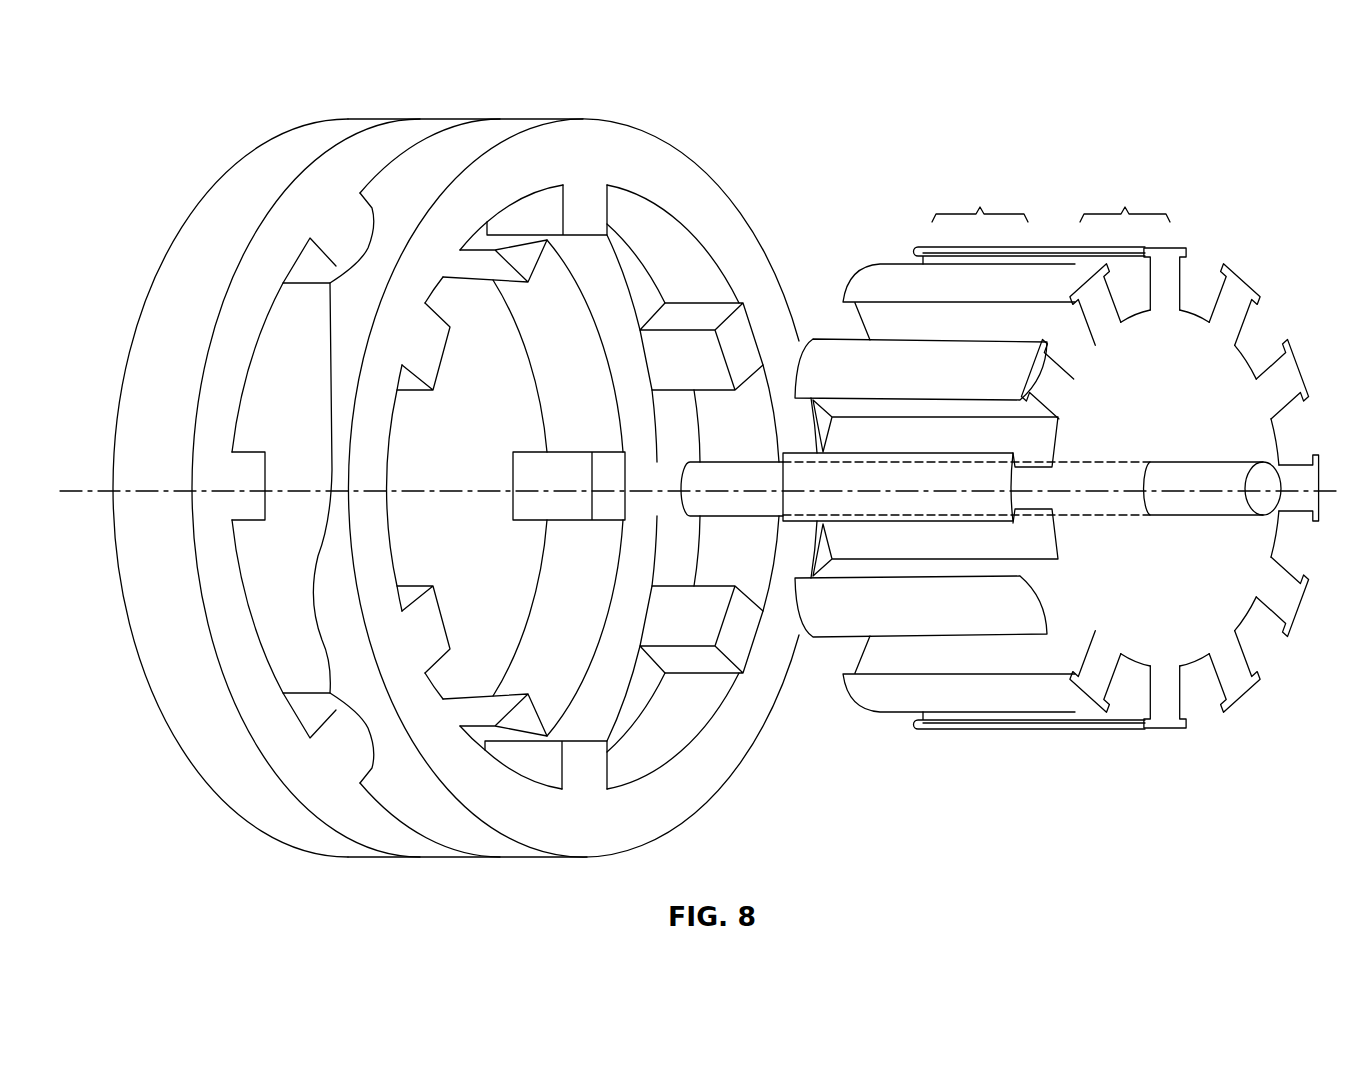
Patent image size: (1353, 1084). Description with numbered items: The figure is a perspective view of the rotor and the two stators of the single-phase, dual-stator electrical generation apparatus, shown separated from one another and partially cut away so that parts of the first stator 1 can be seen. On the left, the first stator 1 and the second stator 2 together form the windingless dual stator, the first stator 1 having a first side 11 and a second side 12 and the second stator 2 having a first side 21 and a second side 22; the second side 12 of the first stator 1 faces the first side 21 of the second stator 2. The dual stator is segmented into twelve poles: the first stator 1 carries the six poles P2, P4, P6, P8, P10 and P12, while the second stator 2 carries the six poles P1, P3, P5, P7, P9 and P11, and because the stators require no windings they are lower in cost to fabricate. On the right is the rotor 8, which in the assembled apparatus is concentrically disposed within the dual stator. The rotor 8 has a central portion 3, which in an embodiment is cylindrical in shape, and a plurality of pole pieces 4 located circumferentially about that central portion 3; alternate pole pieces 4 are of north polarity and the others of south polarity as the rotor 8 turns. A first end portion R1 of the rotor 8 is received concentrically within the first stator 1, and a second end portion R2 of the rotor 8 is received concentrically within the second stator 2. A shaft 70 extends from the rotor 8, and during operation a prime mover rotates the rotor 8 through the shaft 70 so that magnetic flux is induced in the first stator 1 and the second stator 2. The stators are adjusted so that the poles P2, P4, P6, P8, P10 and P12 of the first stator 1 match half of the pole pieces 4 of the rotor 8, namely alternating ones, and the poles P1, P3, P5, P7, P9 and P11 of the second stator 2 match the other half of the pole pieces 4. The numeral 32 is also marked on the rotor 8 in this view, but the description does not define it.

The first stator 1 is at (214, 177).
The second stator 2 is at (732, 177).
The central portion 3 is at (1257, 428).
The pole pieces 4 is at (1240, 287).
The rotor 8 is at (1177, 599).
The first side 11 is at (165, 250).
The second side 12 is at (400, 136).
The first side 21 is at (440, 845).
The second side 22 is at (710, 770).
The rotor pole 32 is at (1195, 667).
The shaft 70 is at (1213, 502).
The pole P1 is at (547, 210).
The pole P2 is at (495, 259).
The pole P3 is at (701, 346).
The pole P4 is at (569, 486).
The pole P5 is at (701, 629).
The pole P6 is at (495, 716).
The pole P7 is at (546, 765).
The pole P8 is at (319, 718).
The pole P9 is at (423, 629).
The pole P10 is at (242, 486).
The pole P11 is at (423, 346).
The pole P12 is at (320, 255).
The first end portion R1 is at (980, 197).
The second end portion R2 is at (1125, 197).